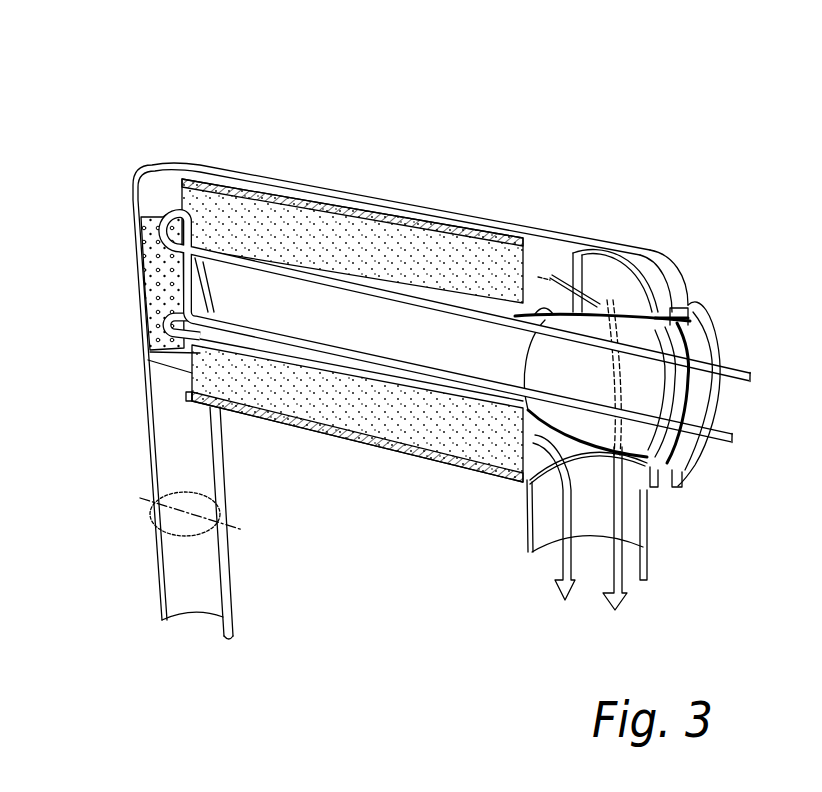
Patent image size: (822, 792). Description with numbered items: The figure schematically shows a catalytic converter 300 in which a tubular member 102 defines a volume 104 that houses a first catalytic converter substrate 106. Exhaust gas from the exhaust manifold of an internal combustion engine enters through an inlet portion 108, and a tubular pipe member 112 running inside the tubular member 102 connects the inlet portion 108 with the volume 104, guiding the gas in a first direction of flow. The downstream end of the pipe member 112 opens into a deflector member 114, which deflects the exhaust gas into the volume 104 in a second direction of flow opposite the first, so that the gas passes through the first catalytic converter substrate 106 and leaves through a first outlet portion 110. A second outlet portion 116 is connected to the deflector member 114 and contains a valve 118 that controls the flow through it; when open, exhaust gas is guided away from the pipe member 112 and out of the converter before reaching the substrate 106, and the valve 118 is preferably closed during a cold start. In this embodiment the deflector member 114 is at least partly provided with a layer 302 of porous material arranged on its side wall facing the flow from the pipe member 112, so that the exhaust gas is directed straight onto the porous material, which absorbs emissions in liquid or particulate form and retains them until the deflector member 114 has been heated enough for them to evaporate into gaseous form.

The catalytic converter 300 is at (174, 90).
The tubular member 102 is at (440, 220).
The volume 104 is at (362, 228).
The first catalytic converter substrate 106 is at (546, 263).
The inlet portion 108 is at (712, 340).
The first outlet portion 110 is at (645, 550).
The tubular pipe member 112 is at (402, 377).
The deflector member 114 is at (133, 198).
The second outlet portion 116 is at (232, 597).
The valve 118 is at (153, 513).
The layer of porous material 302 is at (138, 283).